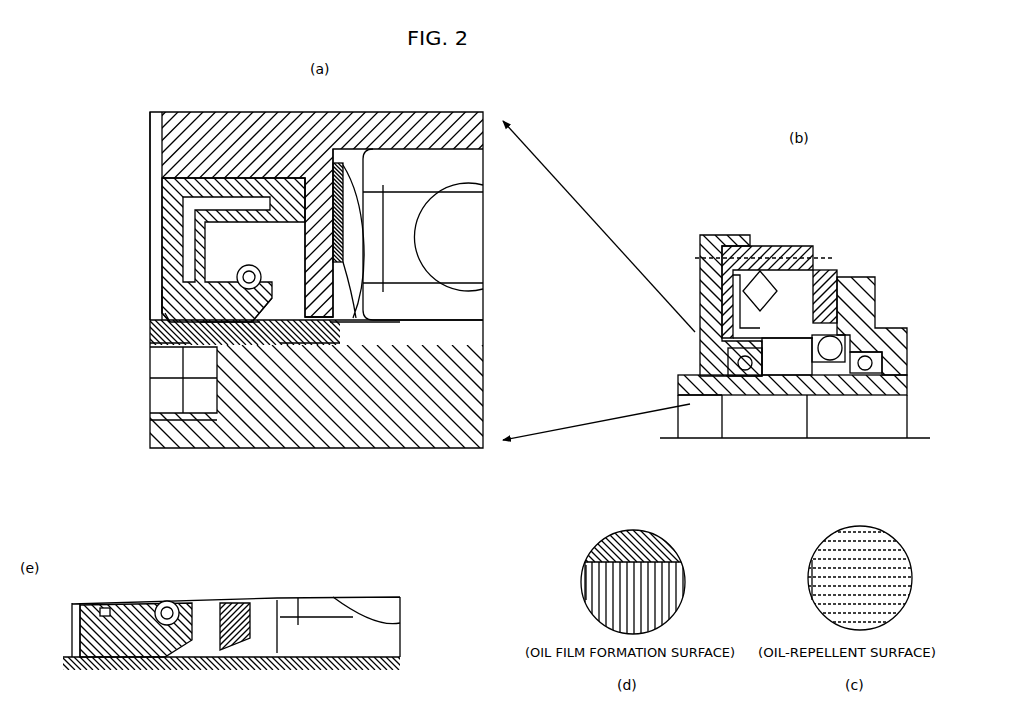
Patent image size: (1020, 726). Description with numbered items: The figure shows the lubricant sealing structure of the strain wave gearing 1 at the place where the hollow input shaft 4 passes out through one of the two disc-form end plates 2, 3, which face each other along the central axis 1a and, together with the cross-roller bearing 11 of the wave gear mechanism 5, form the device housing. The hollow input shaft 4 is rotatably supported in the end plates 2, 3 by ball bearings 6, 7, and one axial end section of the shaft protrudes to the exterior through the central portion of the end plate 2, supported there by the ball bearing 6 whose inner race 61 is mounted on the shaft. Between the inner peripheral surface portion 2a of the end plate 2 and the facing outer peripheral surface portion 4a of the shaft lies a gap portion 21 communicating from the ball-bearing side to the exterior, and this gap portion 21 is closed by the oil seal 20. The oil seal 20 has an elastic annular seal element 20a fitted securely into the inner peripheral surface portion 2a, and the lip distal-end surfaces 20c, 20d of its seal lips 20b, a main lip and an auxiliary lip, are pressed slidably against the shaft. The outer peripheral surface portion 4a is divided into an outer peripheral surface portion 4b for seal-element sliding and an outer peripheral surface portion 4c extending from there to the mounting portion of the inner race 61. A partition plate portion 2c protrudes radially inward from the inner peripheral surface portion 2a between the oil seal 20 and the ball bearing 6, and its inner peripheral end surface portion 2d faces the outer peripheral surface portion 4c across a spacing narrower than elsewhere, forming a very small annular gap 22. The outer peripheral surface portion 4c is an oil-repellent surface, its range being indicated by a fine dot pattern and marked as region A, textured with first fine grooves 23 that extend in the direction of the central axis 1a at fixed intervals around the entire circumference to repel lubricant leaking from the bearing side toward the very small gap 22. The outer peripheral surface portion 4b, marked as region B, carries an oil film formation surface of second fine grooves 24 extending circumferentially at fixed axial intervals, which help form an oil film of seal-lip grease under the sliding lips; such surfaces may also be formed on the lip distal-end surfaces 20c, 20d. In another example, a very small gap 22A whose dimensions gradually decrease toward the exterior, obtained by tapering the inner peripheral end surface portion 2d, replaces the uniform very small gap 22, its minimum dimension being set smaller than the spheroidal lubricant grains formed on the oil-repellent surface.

The strain wave gearing 1 is at (861, 245).
The central axis 1a is at (675, 441).
The end plate 2 is at (698, 290).
The inner peripheral surface portion 2a is at (151, 212).
The partition plate portion 2c is at (316, 282).
The inner peripheral end surface portion 2d is at (367, 337).
The end plate 3 is at (881, 318).
The hollow input shaft 4 is at (825, 400).
The outer peripheral surface portion 4a is at (267, 328).
The outer peripheral surface portion for seal-element sliding 4b is at (178, 341).
The outer peripheral surface portion 4c is at (301, 332).
The wave gear mechanism 5 is at (830, 270).
The ball bearing 6 is at (326, 586).
The ball bearing 7 is at (867, 397).
The cross-roller bearing 11 is at (774, 236).
The oil seal 20 is at (150, 240).
The seal element 20a is at (153, 283).
The seal lips 20b is at (252, 264).
The lip distal-end surface 20c is at (152, 422).
The lip distal-end surface 20d is at (152, 343).
The gap portion 21 is at (343, 226).
The very small annular gap 22 is at (373, 446).
The very small gap 22A is at (243, 657).
The first fine grooves 23 is at (820, 568).
The second fine grooves 24 is at (593, 598).
The inner race 61 is at (466, 304).
The oil-repellent surface region A is at (347, 333).
The oil film formation surface region B is at (248, 326).